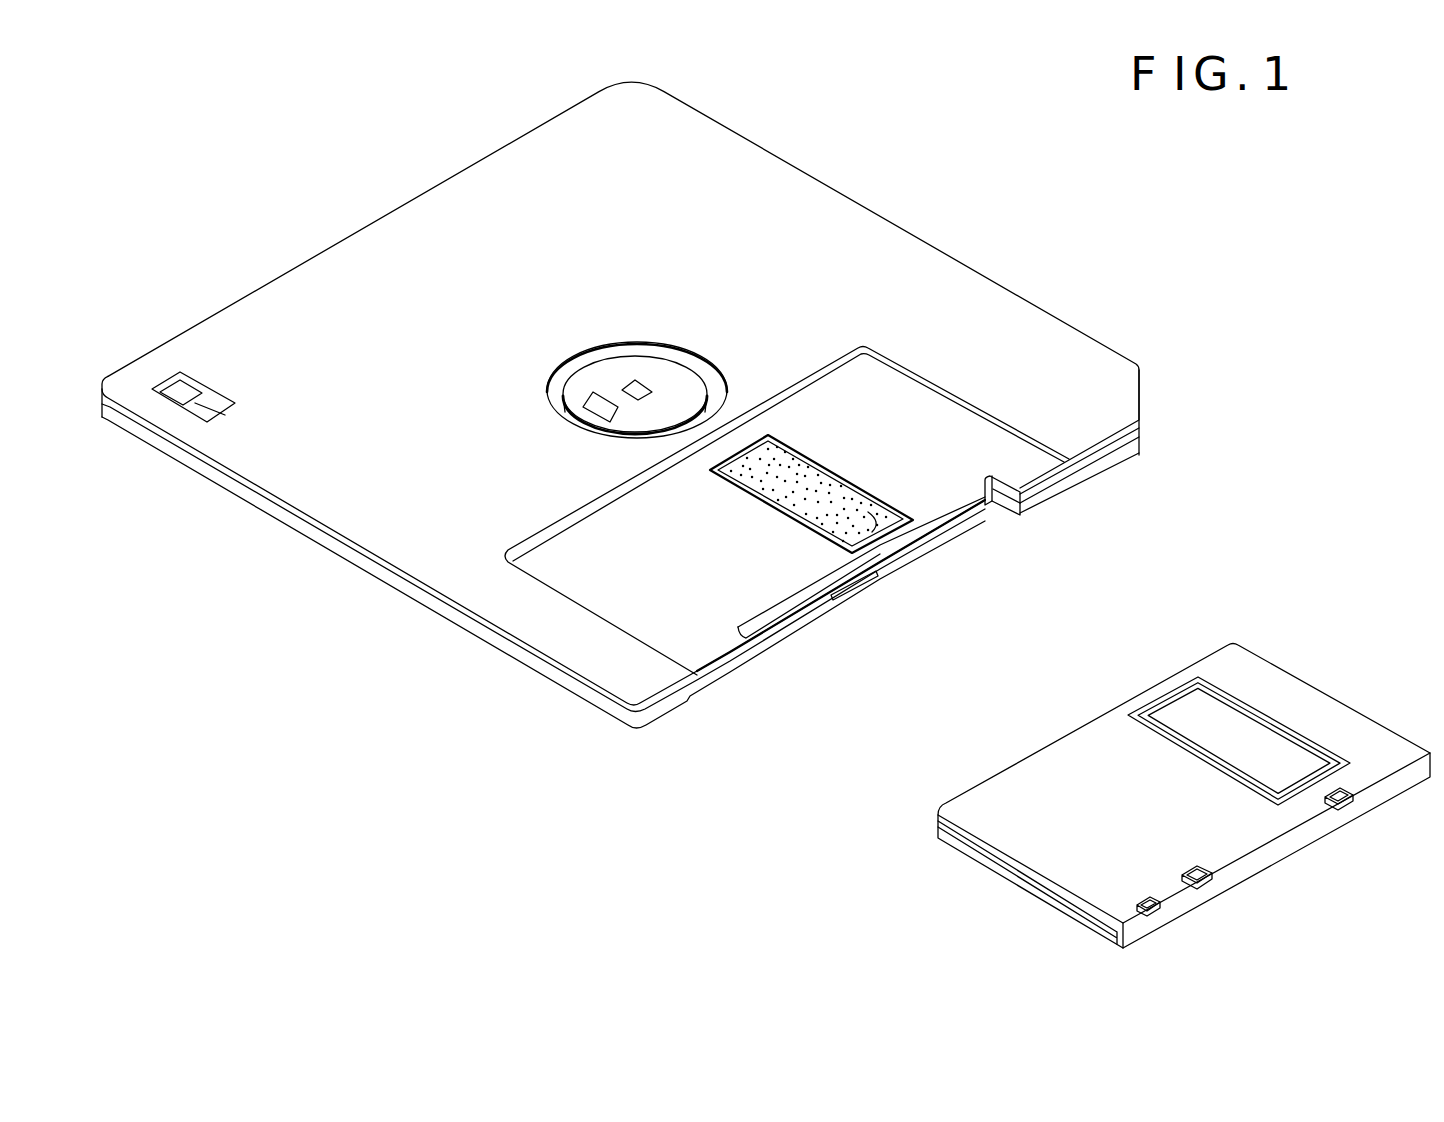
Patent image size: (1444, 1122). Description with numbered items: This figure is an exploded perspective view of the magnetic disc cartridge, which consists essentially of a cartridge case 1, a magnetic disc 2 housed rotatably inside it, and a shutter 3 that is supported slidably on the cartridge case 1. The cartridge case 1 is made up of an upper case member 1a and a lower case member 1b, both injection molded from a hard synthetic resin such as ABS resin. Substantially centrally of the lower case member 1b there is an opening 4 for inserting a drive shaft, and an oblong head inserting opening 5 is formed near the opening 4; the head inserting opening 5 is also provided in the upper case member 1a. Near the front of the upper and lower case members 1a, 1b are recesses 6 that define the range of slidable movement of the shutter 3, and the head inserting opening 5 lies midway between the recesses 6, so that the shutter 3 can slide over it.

The cartridge case 1 is at (262, 602).
The upper case member 1a is at (328, 510).
The lower case member 1b is at (368, 567).
The magnetic disc 2 is at (770, 458).
The shutter 3 is at (1046, 852).
The opening 4 is at (603, 355).
The head inserting opening 5 is at (832, 481).
The recesses 6 is at (945, 400).